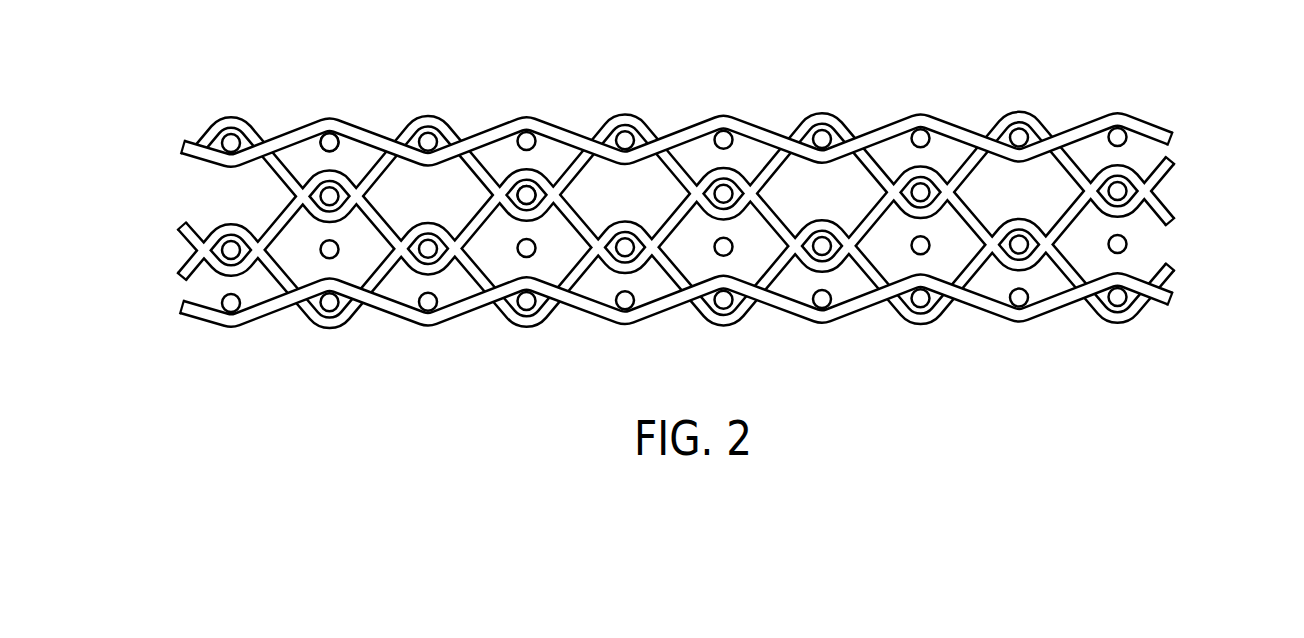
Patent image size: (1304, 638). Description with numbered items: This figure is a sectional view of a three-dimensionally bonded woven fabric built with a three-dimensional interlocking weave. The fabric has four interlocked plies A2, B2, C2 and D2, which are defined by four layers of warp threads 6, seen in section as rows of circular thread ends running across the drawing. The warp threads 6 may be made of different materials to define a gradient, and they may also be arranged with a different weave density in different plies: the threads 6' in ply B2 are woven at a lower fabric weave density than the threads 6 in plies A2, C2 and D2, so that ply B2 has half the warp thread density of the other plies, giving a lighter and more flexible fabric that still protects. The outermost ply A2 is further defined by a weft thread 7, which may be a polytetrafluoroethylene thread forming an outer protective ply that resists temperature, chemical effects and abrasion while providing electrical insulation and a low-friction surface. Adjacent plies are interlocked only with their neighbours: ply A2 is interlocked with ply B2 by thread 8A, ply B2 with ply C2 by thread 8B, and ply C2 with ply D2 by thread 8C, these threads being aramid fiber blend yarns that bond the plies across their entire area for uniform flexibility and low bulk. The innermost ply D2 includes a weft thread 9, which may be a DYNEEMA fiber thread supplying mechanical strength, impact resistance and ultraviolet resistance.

The weft thread 7 is at (181, 139).
The warp threads 6 is at (331, 99).
The warp threads of lower weave density 6' is at (514, 132).
The interlocking thread 8A is at (181, 160).
The interlocking thread 8B is at (181, 228).
The interlocking thread 8C is at (181, 273).
The weft thread 9 is at (193, 312).
The outermost ply A2 is at (1195, 135).
The ply B2 is at (1195, 190).
The ply C2 is at (1195, 241).
The innermost ply D2 is at (1195, 294).